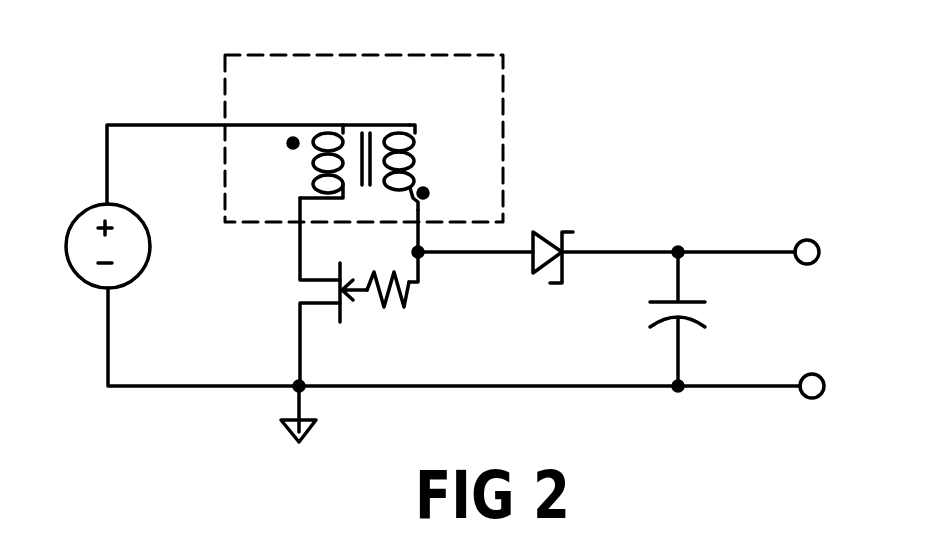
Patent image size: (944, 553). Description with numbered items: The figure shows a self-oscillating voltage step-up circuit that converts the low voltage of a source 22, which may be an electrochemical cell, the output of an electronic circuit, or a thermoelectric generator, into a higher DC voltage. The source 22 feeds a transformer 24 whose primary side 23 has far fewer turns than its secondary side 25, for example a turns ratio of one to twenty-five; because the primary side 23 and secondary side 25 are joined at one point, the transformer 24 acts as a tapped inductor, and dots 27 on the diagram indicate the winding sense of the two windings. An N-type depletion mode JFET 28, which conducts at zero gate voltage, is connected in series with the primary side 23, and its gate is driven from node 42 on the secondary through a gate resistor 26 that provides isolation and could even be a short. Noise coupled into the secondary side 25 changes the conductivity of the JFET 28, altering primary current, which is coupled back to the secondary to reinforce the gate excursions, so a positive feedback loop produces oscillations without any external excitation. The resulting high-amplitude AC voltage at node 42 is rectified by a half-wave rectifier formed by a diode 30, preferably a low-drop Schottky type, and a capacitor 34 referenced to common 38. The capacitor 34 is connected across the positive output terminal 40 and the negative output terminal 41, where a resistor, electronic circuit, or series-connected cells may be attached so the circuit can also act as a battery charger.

The source 22 is at (75, 277).
The primary side of transformer 23 is at (307, 167).
The transformer 24 is at (513, 90).
The secondary side of transformer 25 is at (423, 152).
The gate resistor 26 is at (407, 313).
The schematic dots indicating winding sense 27 is at (286, 144).
The depletion N channel JFET 28 is at (298, 297).
The diode 30 is at (545, 232).
The capacitor 34 is at (700, 320).
The common 38 is at (282, 438).
The positive output terminal from voltage step up circuit 40 is at (820, 273).
The negative output terminal from voltage step up circuit 41 is at (833, 402).
The node 42 is at (425, 257).